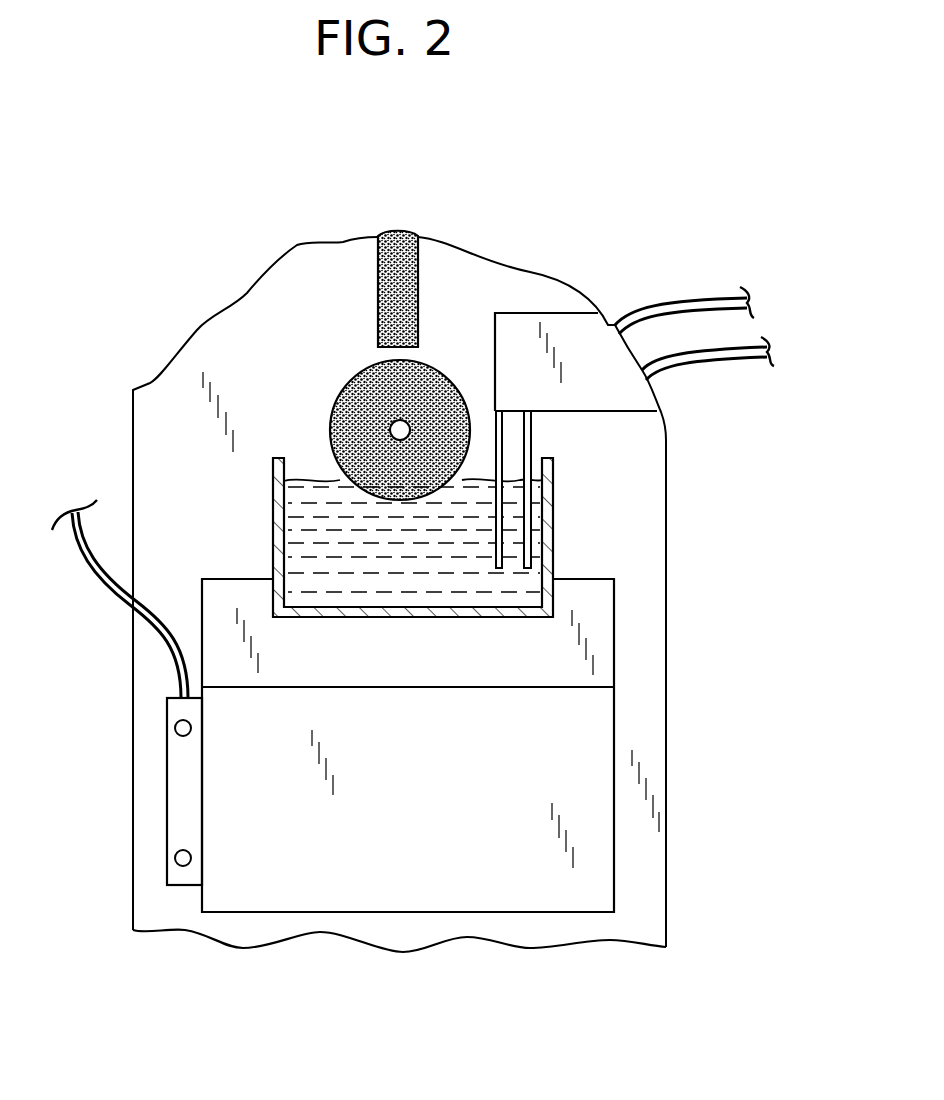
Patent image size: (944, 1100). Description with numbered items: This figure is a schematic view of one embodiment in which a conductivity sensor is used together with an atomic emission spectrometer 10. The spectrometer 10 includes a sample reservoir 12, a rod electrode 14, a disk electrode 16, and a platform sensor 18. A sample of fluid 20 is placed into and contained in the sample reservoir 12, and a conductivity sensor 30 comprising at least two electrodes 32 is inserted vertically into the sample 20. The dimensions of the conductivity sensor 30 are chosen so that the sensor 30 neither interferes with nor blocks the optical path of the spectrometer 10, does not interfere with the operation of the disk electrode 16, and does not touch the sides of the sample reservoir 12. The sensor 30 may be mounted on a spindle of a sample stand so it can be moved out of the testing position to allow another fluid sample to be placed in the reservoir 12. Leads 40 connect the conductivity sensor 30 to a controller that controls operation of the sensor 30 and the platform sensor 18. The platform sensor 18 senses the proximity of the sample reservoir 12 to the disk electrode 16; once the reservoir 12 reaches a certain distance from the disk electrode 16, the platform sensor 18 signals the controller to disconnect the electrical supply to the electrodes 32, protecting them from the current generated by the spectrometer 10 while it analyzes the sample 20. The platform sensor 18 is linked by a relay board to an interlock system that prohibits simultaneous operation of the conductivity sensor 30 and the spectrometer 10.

The atomic emission spectrometer 10 is at (593, 730).
The sample reservoir 12 is at (272, 497).
The rod electrode 14 is at (375, 289).
The disk electrode 16 is at (432, 364).
The platform sensor 18 is at (178, 770).
The sample of fluid 20 is at (433, 583).
The conductivity sensor 30 is at (609, 300).
The electrodes 32 is at (500, 442).
The leads 40 is at (757, 345).